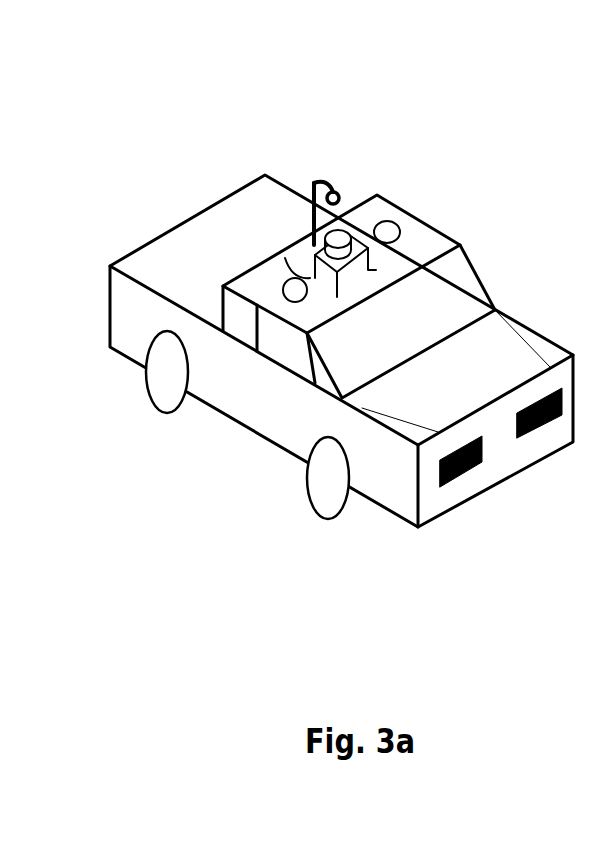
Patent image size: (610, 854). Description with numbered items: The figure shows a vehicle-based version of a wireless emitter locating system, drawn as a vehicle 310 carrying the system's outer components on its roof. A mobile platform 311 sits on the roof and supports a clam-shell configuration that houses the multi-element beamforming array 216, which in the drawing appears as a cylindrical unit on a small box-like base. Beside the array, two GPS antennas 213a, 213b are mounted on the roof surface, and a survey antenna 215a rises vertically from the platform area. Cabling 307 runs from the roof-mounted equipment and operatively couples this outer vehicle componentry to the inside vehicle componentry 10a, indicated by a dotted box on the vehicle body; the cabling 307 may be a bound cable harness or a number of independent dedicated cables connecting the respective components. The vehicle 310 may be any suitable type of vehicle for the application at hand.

The vehicle 310 is at (207, 405).
The mobile platform 311 is at (312, 257).
The cabling 307 is at (285, 260).
The survey antenna 215a is at (315, 178).
The multi-element beamforming array 216 is at (342, 230).
The GPS antenna 213a is at (403, 242).
The GPS antenna 213b is at (313, 303).
The inside vehicle componentry 10a is at (312, 334).